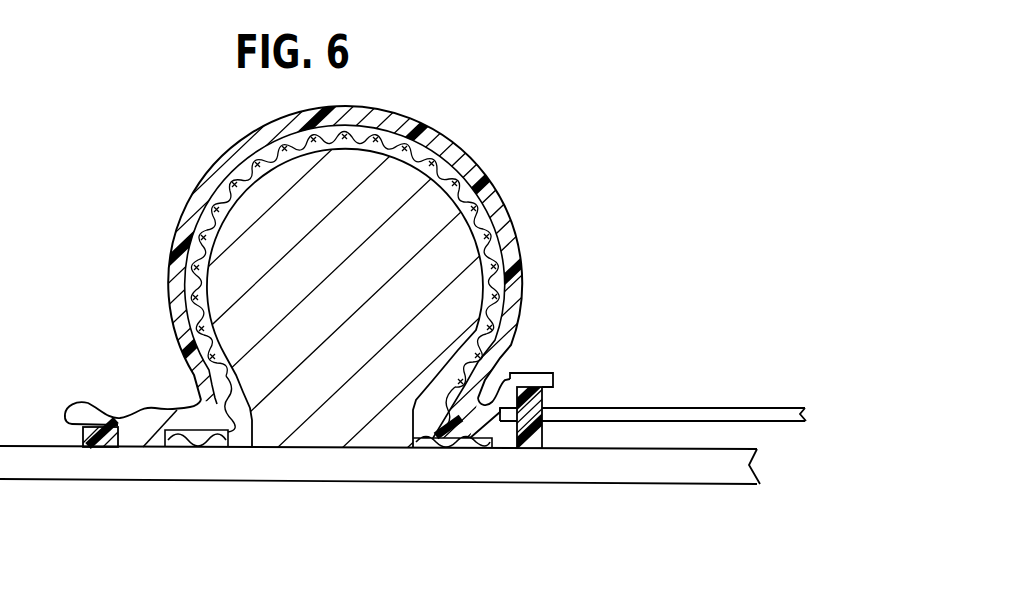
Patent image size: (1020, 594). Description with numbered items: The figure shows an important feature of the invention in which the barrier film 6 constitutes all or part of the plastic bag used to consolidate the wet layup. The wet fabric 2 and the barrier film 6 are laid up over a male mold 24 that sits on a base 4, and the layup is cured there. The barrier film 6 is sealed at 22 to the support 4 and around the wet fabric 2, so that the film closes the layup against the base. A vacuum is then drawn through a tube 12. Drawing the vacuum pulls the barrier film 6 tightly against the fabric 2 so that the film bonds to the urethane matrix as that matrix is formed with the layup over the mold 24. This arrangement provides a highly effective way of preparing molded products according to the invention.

The fabric 2 is at (193, 203).
The base 4 is at (275, 463).
The barrier film 6 is at (180, 321).
The tube 12 is at (708, 411).
The seal 22 is at (110, 448).
The male mold 24 is at (243, 273).